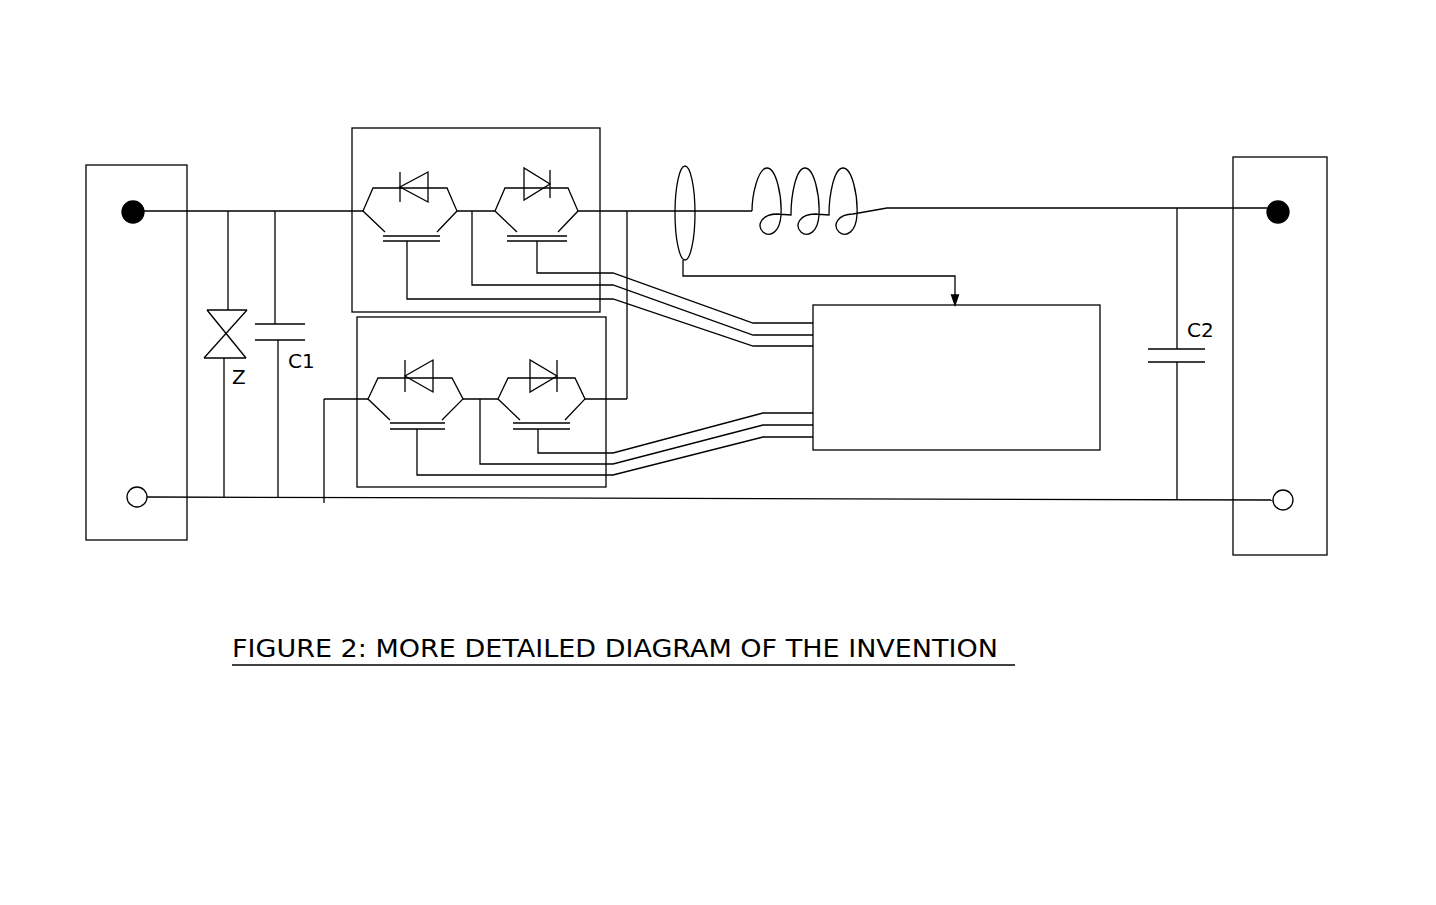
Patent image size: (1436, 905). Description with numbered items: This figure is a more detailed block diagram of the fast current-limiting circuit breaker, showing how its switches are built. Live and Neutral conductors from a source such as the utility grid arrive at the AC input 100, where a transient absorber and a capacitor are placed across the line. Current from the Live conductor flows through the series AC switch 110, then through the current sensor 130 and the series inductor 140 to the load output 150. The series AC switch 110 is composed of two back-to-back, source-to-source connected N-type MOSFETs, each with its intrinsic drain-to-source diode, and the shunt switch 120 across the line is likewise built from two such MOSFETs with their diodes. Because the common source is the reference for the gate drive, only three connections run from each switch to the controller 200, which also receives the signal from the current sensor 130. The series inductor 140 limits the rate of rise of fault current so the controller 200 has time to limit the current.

The AC input 100 is at (147, 157).
The series AC switch 110 is at (510, 58).
The shunt switch 120 is at (481, 500).
The current sensor 130 is at (689, 151).
The series inductor 140 is at (945, 145).
The load output 150 is at (1273, 143).
The controller 200 is at (1065, 355).